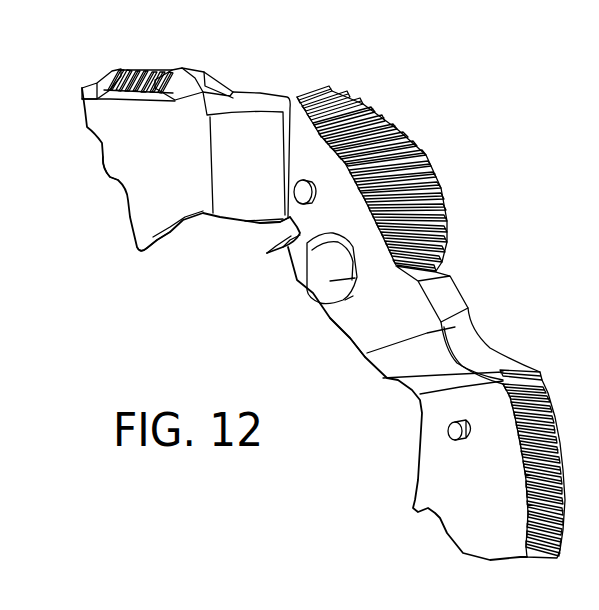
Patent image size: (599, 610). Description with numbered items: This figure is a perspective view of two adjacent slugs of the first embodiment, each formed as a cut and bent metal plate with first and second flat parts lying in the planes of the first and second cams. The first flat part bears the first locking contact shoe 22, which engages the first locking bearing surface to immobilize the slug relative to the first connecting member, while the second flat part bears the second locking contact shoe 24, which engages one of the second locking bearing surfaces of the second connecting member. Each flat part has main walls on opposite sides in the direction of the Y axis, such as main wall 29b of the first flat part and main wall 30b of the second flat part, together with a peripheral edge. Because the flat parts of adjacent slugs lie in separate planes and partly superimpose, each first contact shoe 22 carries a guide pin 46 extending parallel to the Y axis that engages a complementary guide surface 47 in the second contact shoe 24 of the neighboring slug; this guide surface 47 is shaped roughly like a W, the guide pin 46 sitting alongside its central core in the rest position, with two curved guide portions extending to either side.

The first locking contact shoe 22 is at (393, 150).
The second locking contact shoe 24 is at (122, 137).
The main wall of the first flat part 29b is at (320, 147).
The main wall of the second flat part 30b is at (153, 203).
The guide pin 46 is at (297, 183).
The guide surface 47 is at (123, 188).